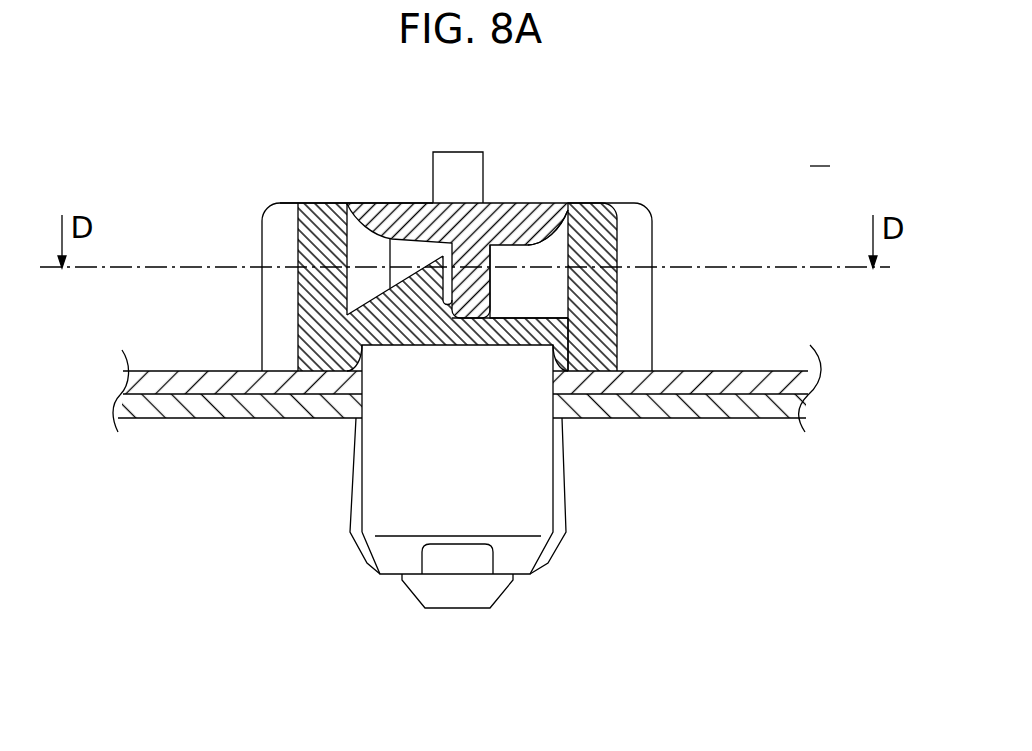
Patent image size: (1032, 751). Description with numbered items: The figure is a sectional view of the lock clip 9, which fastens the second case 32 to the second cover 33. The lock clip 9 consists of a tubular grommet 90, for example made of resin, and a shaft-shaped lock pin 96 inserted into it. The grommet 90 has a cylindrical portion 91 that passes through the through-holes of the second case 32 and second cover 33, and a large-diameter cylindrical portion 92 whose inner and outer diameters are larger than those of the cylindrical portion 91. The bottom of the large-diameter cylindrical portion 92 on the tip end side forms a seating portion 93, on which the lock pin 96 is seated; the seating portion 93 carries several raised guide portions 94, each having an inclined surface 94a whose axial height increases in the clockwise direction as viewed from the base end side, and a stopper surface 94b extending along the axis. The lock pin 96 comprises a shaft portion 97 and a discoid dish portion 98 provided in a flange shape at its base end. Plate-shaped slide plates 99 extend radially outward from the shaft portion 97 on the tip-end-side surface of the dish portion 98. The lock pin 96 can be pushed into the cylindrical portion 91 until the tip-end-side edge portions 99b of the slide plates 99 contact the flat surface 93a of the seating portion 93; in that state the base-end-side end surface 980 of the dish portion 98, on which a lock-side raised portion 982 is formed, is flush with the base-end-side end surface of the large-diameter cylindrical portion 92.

The lock clip 9 is at (820, 151).
The grommet 90 is at (648, 220).
The cylindrical portion 91 is at (542, 488).
The large-diameter cylindrical portion 92 is at (600, 290).
The seating portion 93 is at (543, 304).
The flat surface 93a is at (520, 317).
The guide portion 94 is at (416, 300).
The inclined surface 94a is at (380, 276).
The stopper surface 94b is at (450, 260).
The lock pin 96 is at (378, 156).
The shaft portion 97 is at (495, 582).
The dish portion 98 is at (368, 207).
The end surface 980 is at (393, 203).
The lock-side raised portion 982 is at (448, 162).
The slide plate 99 is at (470, 303).
The edge portion 99b is at (445, 318).
The second case 32 is at (790, 410).
The second cover 33 is at (790, 377).